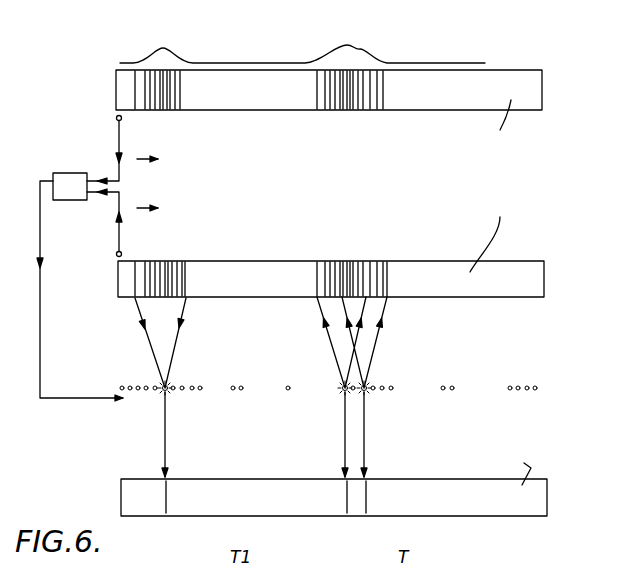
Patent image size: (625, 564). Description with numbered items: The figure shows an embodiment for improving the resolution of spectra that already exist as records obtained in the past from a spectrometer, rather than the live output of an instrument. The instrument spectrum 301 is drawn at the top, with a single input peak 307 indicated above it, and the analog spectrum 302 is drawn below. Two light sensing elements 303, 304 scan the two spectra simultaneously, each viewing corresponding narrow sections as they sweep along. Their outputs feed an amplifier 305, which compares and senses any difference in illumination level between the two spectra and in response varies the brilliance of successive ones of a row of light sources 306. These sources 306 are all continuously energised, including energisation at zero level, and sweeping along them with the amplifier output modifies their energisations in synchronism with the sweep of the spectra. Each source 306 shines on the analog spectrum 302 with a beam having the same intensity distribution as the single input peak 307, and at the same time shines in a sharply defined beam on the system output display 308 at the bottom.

The instrument spectrum 301 is at (418, 104).
The analog spectrum 302 is at (428, 262).
The light sensing element 303 is at (120, 121).
The light sensing element 304 is at (121, 252).
The amplifier 305 is at (70, 178).
The light sources 306 is at (191, 387).
The input peak 307 is at (152, 60).
The system output display 308 is at (462, 507).